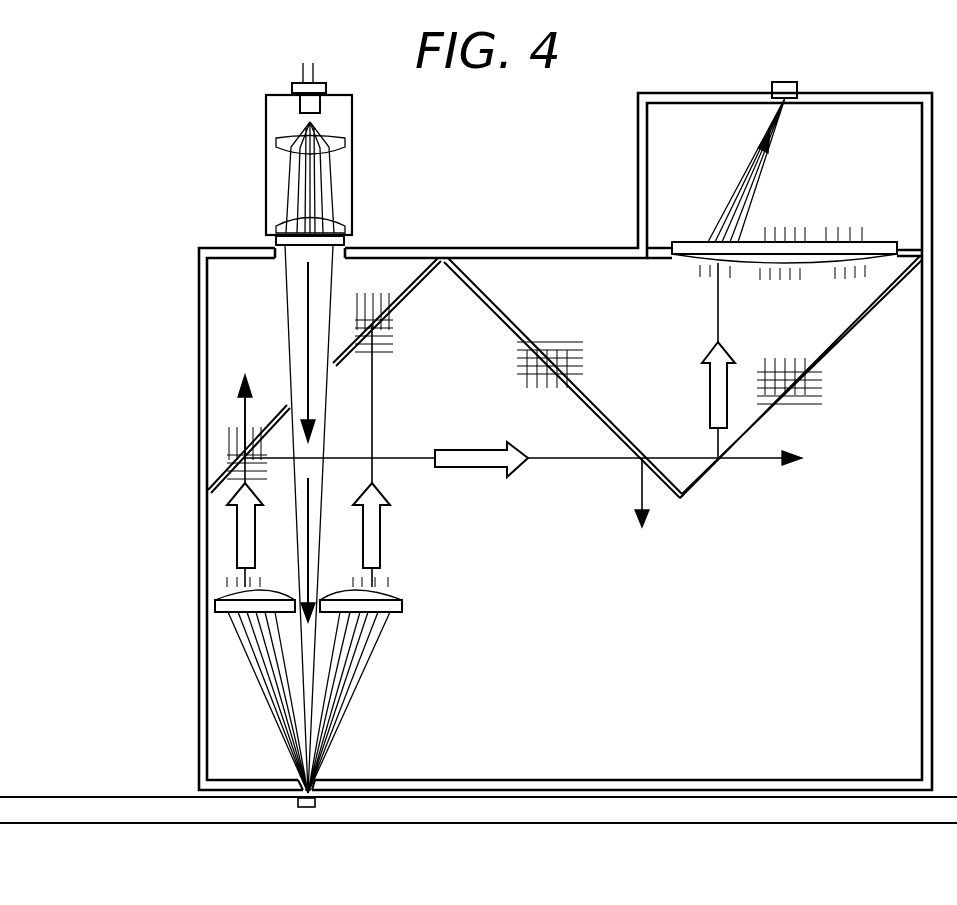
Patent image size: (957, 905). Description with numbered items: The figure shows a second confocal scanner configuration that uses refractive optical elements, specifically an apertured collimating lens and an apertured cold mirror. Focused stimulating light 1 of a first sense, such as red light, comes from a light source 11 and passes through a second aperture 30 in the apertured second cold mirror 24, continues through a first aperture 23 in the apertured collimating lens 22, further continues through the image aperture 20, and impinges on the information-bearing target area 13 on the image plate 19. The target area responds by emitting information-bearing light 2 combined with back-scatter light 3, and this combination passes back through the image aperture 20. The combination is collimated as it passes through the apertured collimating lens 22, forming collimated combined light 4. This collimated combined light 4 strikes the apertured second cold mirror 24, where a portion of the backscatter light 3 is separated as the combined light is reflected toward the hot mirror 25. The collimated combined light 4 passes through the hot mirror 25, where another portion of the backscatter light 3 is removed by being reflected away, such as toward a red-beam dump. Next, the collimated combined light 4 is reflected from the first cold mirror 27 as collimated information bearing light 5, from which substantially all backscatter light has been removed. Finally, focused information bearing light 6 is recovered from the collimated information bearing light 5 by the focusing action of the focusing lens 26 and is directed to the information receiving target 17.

The focused stimulating light 1 is at (308, 293).
The information-bearing light 2 is at (320, 767).
The back-scatter light 3 is at (245, 405).
The collimated combined light 4 is at (237, 527).
The collimated information bearing light 5 is at (706, 392).
The focused information bearing light 6 is at (740, 195).
The light source 11 is at (266, 165).
The information-bearing target area 13 is at (308, 808).
The information receiving target 17 is at (777, 84).
The image plate 19 is at (680, 828).
The image aperture 20 is at (288, 771).
The apertured collimating lens 22 is at (213, 606).
The first aperture 23 is at (323, 622).
The apertured second cold mirror 24 is at (213, 456).
The hot mirror 25 is at (513, 313).
The focusing lens 26 is at (887, 242).
The first cold mirror 27 is at (850, 340).
The second aperture 30 is at (333, 392).